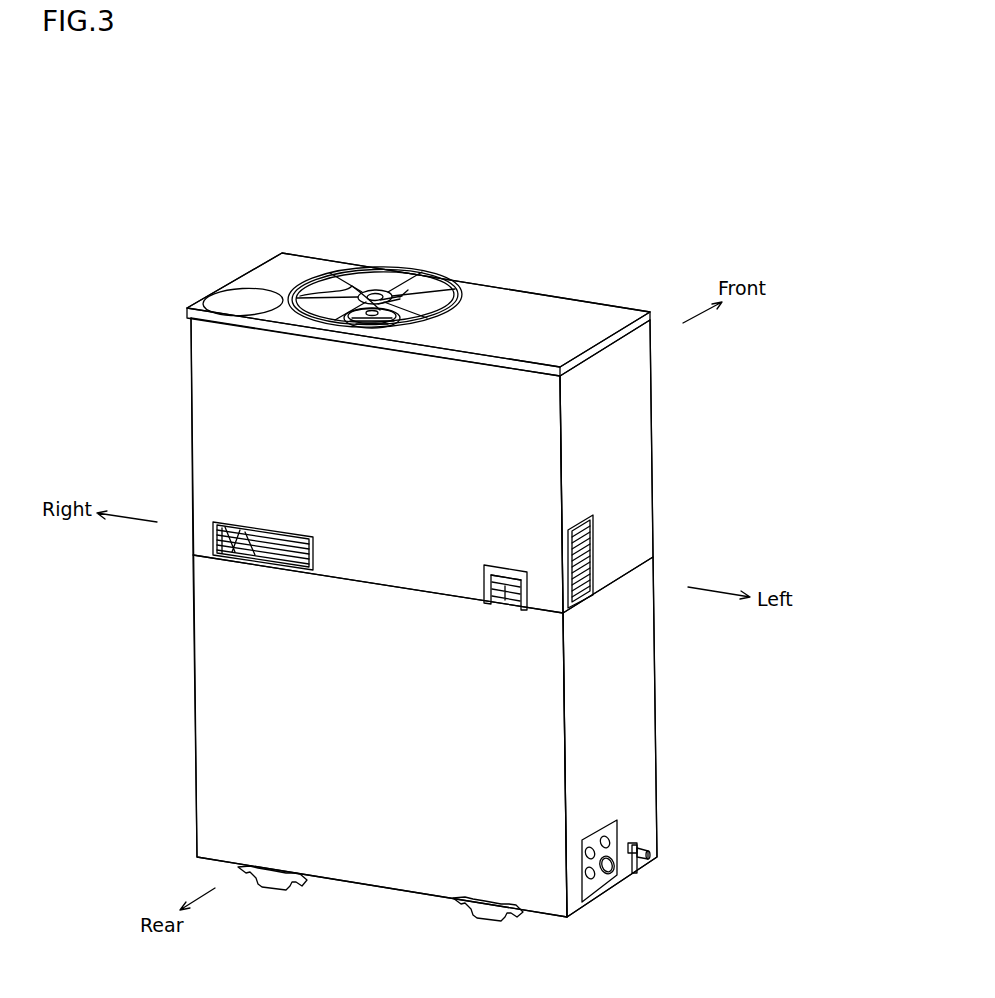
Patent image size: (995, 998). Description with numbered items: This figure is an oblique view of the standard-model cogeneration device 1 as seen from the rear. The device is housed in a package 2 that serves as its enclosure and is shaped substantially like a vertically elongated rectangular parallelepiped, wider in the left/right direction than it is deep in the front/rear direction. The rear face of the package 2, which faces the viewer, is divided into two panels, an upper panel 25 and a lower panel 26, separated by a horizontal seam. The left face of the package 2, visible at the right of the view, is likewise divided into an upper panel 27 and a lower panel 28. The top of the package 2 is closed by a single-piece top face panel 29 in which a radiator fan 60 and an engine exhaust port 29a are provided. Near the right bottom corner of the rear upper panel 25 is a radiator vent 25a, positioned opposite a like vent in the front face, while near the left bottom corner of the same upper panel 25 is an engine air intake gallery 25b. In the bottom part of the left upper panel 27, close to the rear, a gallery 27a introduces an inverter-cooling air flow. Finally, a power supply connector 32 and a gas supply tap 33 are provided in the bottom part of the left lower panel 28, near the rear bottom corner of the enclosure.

The cogeneration device 1 is at (582, 222).
The package 2 is at (338, 260).
The radiator fan 60 is at (407, 297).
The top face panel 29 is at (512, 307).
The engine exhaust port 29a is at (230, 298).
The upper panel 25 is at (215, 408).
The lower panel 26 is at (215, 720).
The upper panel 27 is at (634, 437).
The lower panel 28 is at (642, 737).
The radiator vent 25a is at (236, 560).
The engine air intake gallery 25b is at (505, 597).
The gallery 27a is at (600, 566).
The power supply connector 32 is at (600, 887).
The gas supply tap 33 is at (657, 857).